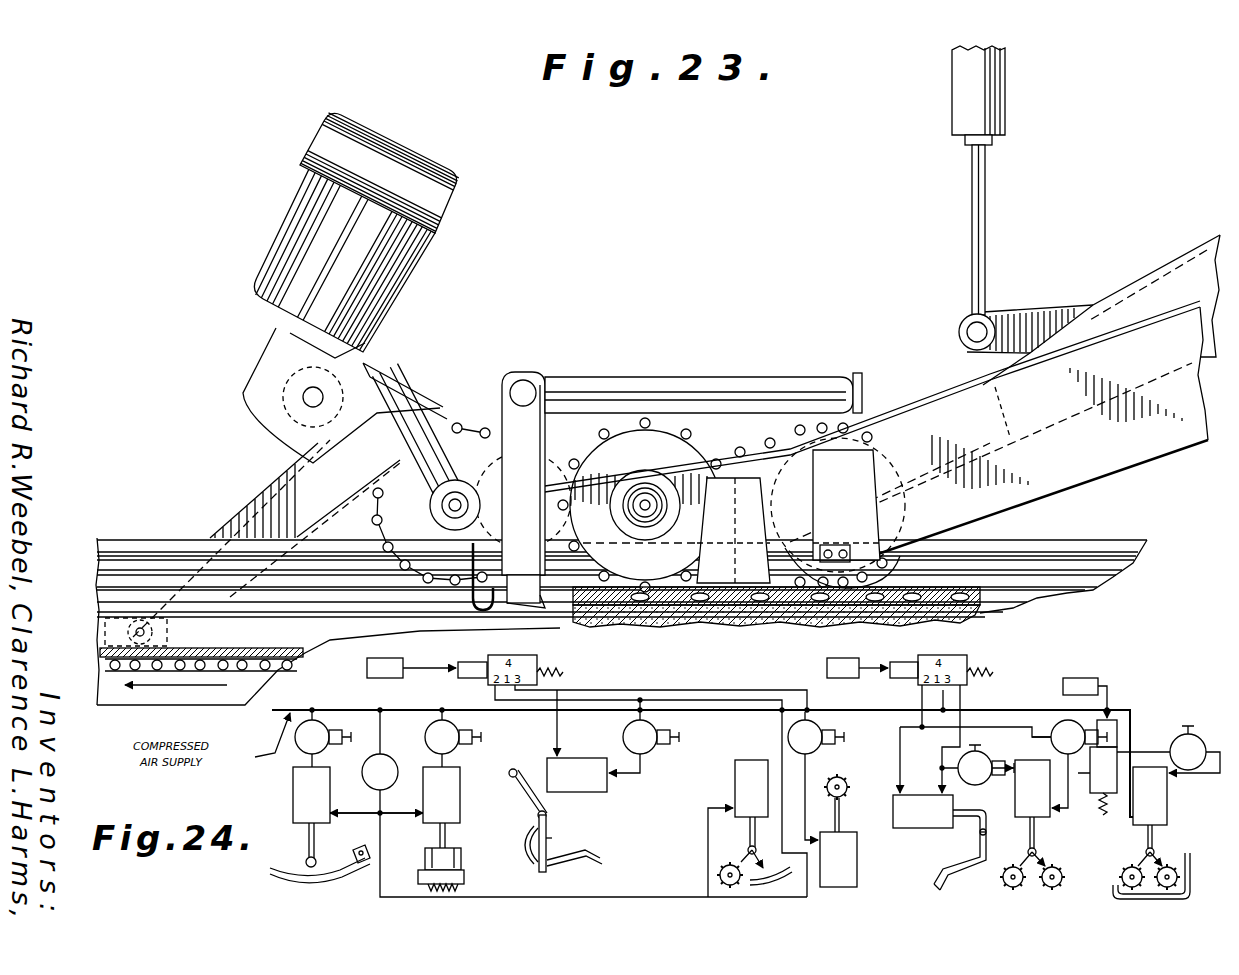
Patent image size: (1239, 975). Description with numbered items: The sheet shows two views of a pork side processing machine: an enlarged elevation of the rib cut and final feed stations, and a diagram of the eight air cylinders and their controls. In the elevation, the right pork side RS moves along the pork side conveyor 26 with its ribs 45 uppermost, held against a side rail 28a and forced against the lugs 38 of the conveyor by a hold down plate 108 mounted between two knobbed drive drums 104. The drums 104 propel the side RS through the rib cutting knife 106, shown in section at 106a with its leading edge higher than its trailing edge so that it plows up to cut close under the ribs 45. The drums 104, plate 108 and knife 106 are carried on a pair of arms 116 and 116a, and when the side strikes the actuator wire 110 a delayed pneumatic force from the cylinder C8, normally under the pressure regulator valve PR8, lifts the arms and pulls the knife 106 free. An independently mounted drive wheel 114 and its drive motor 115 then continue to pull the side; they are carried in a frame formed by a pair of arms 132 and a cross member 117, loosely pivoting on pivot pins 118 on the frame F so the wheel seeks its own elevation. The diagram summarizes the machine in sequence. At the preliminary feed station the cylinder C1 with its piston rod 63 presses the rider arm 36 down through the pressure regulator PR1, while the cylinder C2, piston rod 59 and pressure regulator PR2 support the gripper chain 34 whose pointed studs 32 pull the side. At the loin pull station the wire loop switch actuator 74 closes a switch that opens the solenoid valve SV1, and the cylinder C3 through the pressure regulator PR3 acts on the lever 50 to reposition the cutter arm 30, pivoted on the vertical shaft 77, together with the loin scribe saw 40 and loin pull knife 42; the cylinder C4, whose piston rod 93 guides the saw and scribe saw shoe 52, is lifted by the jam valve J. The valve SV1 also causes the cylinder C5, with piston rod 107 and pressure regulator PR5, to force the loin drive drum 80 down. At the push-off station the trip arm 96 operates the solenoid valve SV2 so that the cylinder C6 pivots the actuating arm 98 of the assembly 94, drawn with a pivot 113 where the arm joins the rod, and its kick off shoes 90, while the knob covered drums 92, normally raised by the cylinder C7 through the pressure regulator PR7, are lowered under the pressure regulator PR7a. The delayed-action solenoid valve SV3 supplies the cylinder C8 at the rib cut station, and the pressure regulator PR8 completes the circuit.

In FIG. 23, the drive motor 115 is at (392, 262).
In FIG. 23, the cross member 117 is at (421, 395).
In FIG. 23, the drive wheel 114 is at (472, 428).
In FIG. 23, the knobbed drive drums 104 is at (690, 452).
In FIG. 24, the knobbed drive drums 104 is at (1120, 872).
In FIG. 23, the hold down plate 108 is at (735, 557).
In FIG. 23, the actuator wire 110 is at (492, 560).
In FIG. 24, the actuator wire 110 is at (1082, 678).
In FIG. 23, the arm 132 is at (260, 502).
In FIG. 23, the side rail 28a is at (142, 550).
In FIG. 23, the pivot pins 118 is at (103, 636).
In FIG. 23, the lugs 38 is at (231, 648).
In FIG. 23, the pork side conveyor 26 is at (272, 650).
In FIG. 23, the frame F is at (163, 702).
In FIG. 23, the rib cutting knife 106 is at (530, 628).
In FIG. 24, the rib cutting knife 106 is at (1122, 904).
In FIG. 23, the rib knife section 106a is at (580, 626).
In FIG. 24, the trip arm 96 is at (850, 658).
In FIG. 23, the ribs 45 is at (875, 590).
In FIG. 23, the right pork side RS is at (940, 590).
In FIG. 23, the arm 116 is at (1135, 292).
In FIG. 23, the arm 116a is at (1107, 462).
In FIG. 23, the pneumatic cylinder C8 is at (993, 83).
In FIG. 24, the pneumatic cylinder C8 is at (1150, 796).
In FIG. 24, the wire loop switch actuator 74 is at (405, 659).
In FIG. 24, the piston rod 63 is at (309, 841).
In FIG. 24, the rider arm 36 is at (338, 876).
In FIG. 24, the piston rod 59 is at (440, 838).
In FIG. 24, the gripper chain 34 is at (464, 866).
In FIG. 24, the pointed studs 32 is at (441, 892).
In FIG. 24, the lever 50 is at (518, 796).
In FIG. 24, the vertical shaft 77 is at (548, 822).
In FIG. 24, the loin pull knife 42 is at (524, 836).
In FIG. 24, the cutter arm 30 is at (548, 845).
In FIG. 24, the scribe saw shoe 52 is at (592, 853).
In FIG. 24, the loin scribe saw 40 is at (562, 866).
In FIG. 24, the piston rod 93 is at (758, 834).
In FIG. 24, the loin drive drum 80 is at (840, 774).
In FIG. 24, the piston rod 107 is at (840, 806).
In FIG. 24, the kick off assembly 94 is at (967, 857).
In FIG. 24, the kick off shoes 90 is at (936, 886).
In FIG. 24, the actuating arm 98 is at (984, 826).
In FIG. 24, the pivot pin 113 is at (979, 831).
In FIG. 24, the knob covered drums 92 is at (1013, 887).
In FIG. 24, the solenoid valve SV1 is at (562, 664).
In FIG. 24, the solenoid valve SV2 is at (965, 666).
In FIG. 24, the solenoid valve SV3 is at (1123, 745).
In FIG. 24, the pressure regulator PR1 is at (323, 739).
In FIG. 24, the pressure regulator PR2 is at (453, 739).
In FIG. 24, the pressure regulator PR3 is at (644, 735).
In FIG. 24, the pressure regulator PR5 is at (816, 776).
In FIG. 24, the pressure regulator PR7 is at (1069, 764).
In FIG. 24, the pressure regulator PR7a is at (986, 765).
In FIG. 24, the pressure regulator valve PR8 is at (1194, 749).
In FIG. 24, the pneumatic cylinder C1 is at (311, 795).
In FIG. 24, the pneumatic cylinder C2 is at (441, 795).
In FIG. 24, the hydraulic cylinder C3 is at (577, 775).
In FIG. 24, the cylinder C4 is at (738, 828).
In FIG. 24, the cylinder C5 is at (838, 859).
In FIG. 24, the cylinder C6 is at (923, 811).
In FIG. 24, the cylinder C7 is at (1032, 788).
In FIG. 24, the jam valve J is at (380, 772).